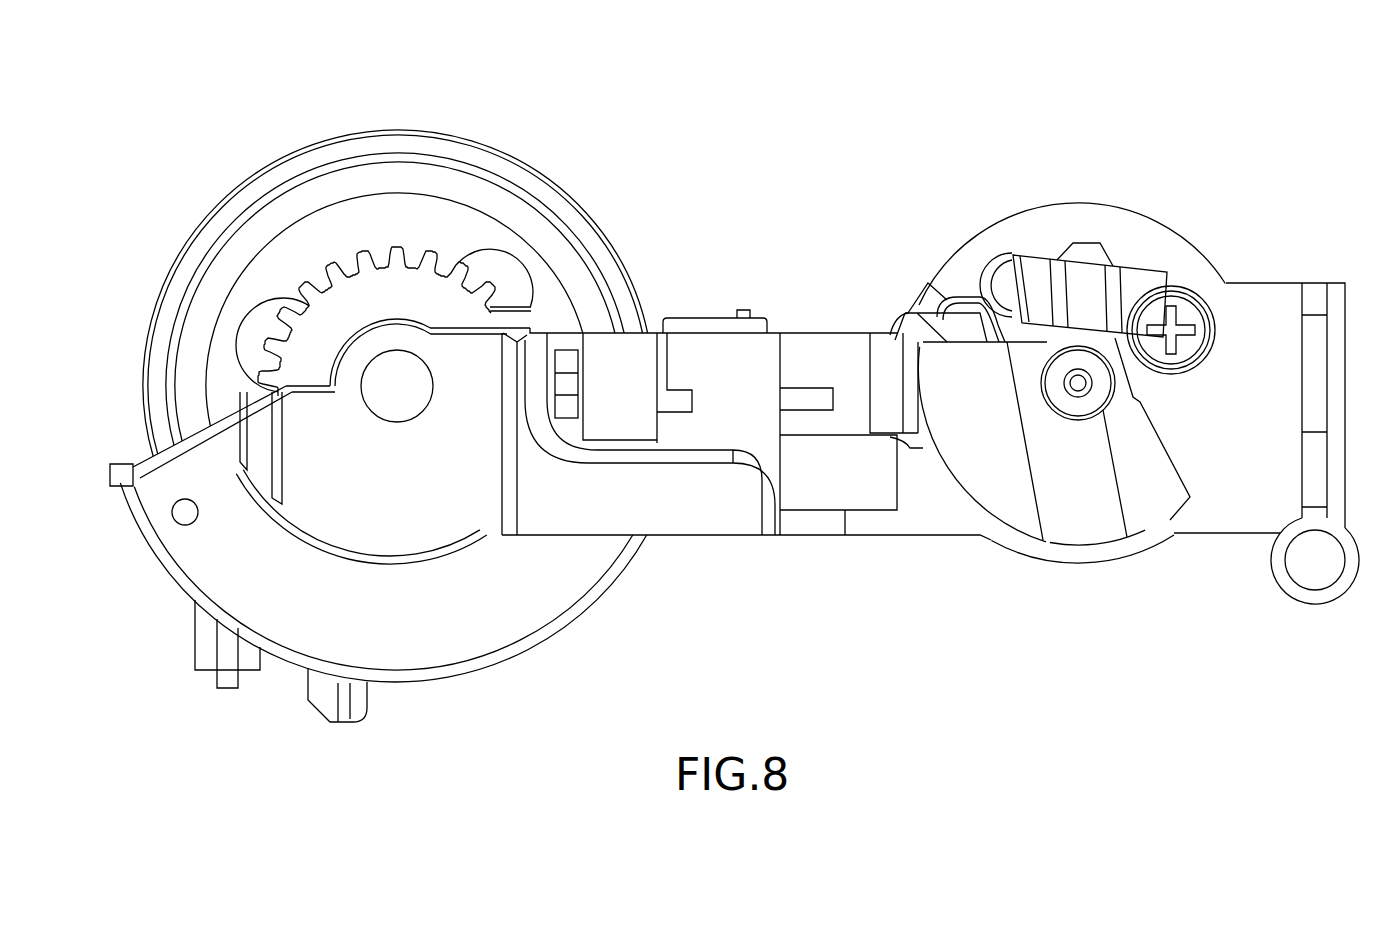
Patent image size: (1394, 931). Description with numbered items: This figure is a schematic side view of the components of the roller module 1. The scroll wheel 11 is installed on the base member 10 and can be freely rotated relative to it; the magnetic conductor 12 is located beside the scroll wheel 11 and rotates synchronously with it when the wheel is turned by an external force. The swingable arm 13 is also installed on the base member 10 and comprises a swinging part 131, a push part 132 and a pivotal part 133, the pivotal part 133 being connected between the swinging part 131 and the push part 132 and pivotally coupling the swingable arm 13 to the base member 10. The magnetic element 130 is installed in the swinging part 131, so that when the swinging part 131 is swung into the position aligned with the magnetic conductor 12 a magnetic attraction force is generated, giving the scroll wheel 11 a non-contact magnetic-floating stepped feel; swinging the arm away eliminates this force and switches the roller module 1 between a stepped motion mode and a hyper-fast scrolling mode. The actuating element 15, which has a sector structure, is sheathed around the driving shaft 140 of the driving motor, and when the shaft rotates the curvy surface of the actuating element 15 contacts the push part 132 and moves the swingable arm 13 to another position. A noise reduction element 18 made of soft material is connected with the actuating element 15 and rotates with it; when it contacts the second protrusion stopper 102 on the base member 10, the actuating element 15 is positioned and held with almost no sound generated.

The roller module 1 is at (734, 412).
The base member 10 is at (511, 623).
The scroll wheel 11 is at (350, 153).
The magnetic conductor 12 is at (360, 310).
The swingable arm 13 is at (686, 334).
The magnetic element 130 is at (566, 383).
The swinging part 131 is at (600, 417).
The push part 132 is at (958, 327).
The pivotal part 133 is at (715, 428).
The second protrusion stopper 102 is at (1005, 280).
The noise reduction element 18 is at (1143, 290).
The actuating element 15 is at (1152, 470).
The driving shaft 140 is at (1066, 388).